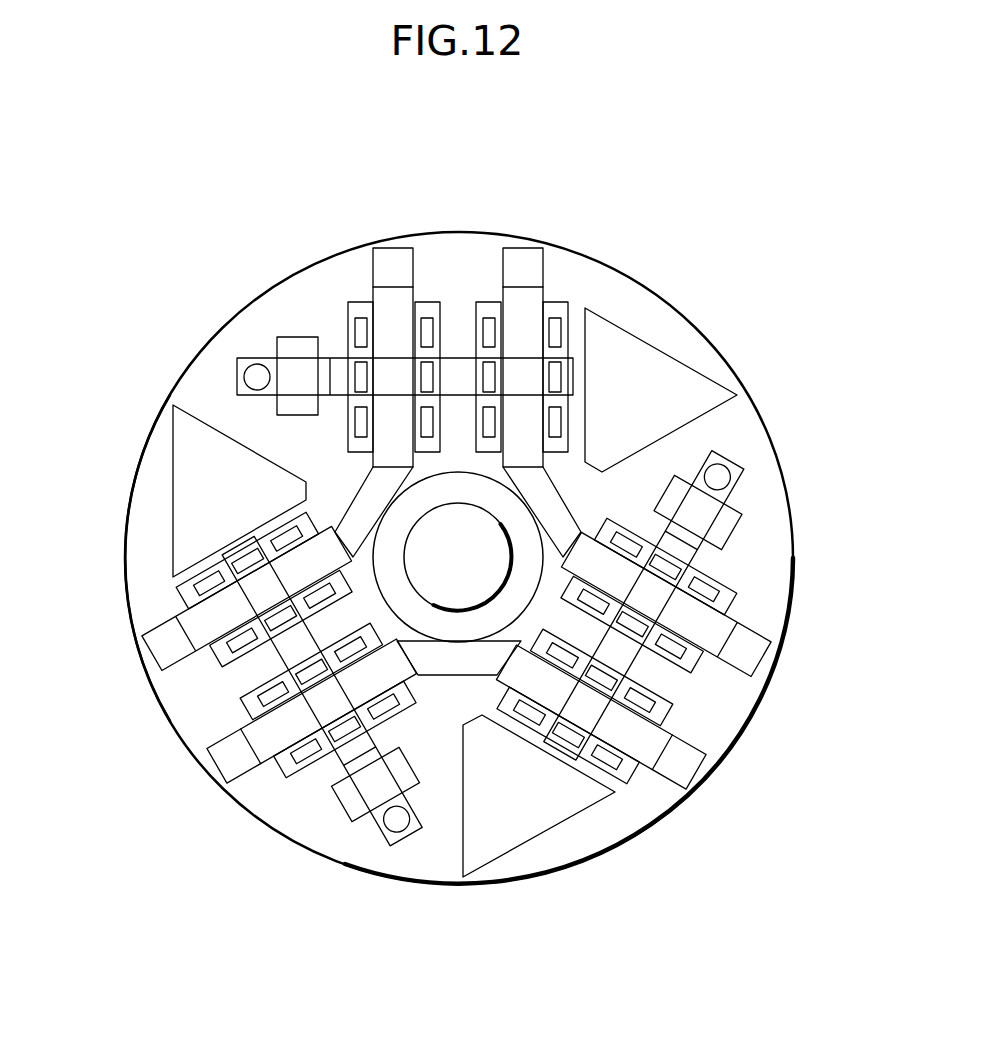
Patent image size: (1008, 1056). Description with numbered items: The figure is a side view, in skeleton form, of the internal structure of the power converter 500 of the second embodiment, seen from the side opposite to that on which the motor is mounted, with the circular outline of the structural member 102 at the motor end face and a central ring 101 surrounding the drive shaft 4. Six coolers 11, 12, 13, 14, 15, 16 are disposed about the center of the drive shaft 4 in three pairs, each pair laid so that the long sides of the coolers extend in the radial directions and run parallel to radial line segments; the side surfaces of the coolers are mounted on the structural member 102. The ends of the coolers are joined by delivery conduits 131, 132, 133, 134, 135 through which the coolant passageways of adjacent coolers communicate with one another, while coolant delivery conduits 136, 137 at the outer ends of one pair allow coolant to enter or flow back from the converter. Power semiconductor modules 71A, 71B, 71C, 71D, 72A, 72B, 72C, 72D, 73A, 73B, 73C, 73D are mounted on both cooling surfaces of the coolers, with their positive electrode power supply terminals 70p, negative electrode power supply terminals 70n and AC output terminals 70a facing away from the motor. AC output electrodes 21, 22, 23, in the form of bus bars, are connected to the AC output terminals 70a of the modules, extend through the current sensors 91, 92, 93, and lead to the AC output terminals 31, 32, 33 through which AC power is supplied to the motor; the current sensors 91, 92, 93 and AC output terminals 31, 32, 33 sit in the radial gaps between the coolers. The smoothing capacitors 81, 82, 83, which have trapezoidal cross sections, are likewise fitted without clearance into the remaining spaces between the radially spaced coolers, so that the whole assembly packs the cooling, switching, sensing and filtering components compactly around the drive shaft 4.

The power converter 500 is at (694, 207).
The structural member 102 is at (205, 390).
The rotor ring 101 is at (457, 492).
The drive shaft 4 is at (470, 592).
The delivery conduit 133 is at (365, 508).
The delivery conduit 134 is at (447, 670).
The delivery conduit 135 is at (548, 507).
The smoothing capacitor 81 is at (693, 383).
The smoothing capacitor 82 is at (180, 440).
The smoothing capacitor 83 is at (495, 848).
The cooler 11 is at (522, 293).
The cooler 12 is at (393, 293).
The cooler 13 is at (190, 637).
The cooler 14 is at (245, 757).
The cooler 15 is at (655, 742).
The cooler 16 is at (722, 637).
The coolant delivery conduit 136 is at (526, 255).
The coolant delivery conduit 137 is at (388, 255).
The delivery conduit 131 is at (215, 743).
The delivery conduit 132 is at (697, 742).
The power semiconductor module 71A is at (560, 303).
The power semiconductor module 71B is at (490, 300).
The power semiconductor module 71C is at (423, 300).
The power semiconductor module 71D is at (355, 303).
The power semiconductor module 72A is at (180, 595).
The power semiconductor module 72B is at (212, 657).
The power semiconductor module 72C is at (248, 713).
The power semiconductor module 72D is at (300, 790).
The power semiconductor module 73A is at (630, 800).
The power semiconductor module 73B is at (662, 715).
The power semiconductor module 73C is at (723, 668).
The power semiconductor module 73D is at (738, 602).
The positive electrode power supply terminal 70p is at (565, 333).
The AC output terminal 70a is at (563, 377).
The negative electrode power supply terminal 70n is at (563, 422).
The AC output electrode 21 is at (388, 378).
The AC output electrode 22 is at (355, 720).
The AC output electrode 23 is at (650, 540).
The AC output terminal 31 is at (255, 366).
The AC output terminal 32 is at (383, 832).
The AC output terminal 33 is at (723, 482).
The current sensor 91 is at (298, 342).
The current sensor 92 is at (345, 800).
The current sensor 93 is at (727, 535).